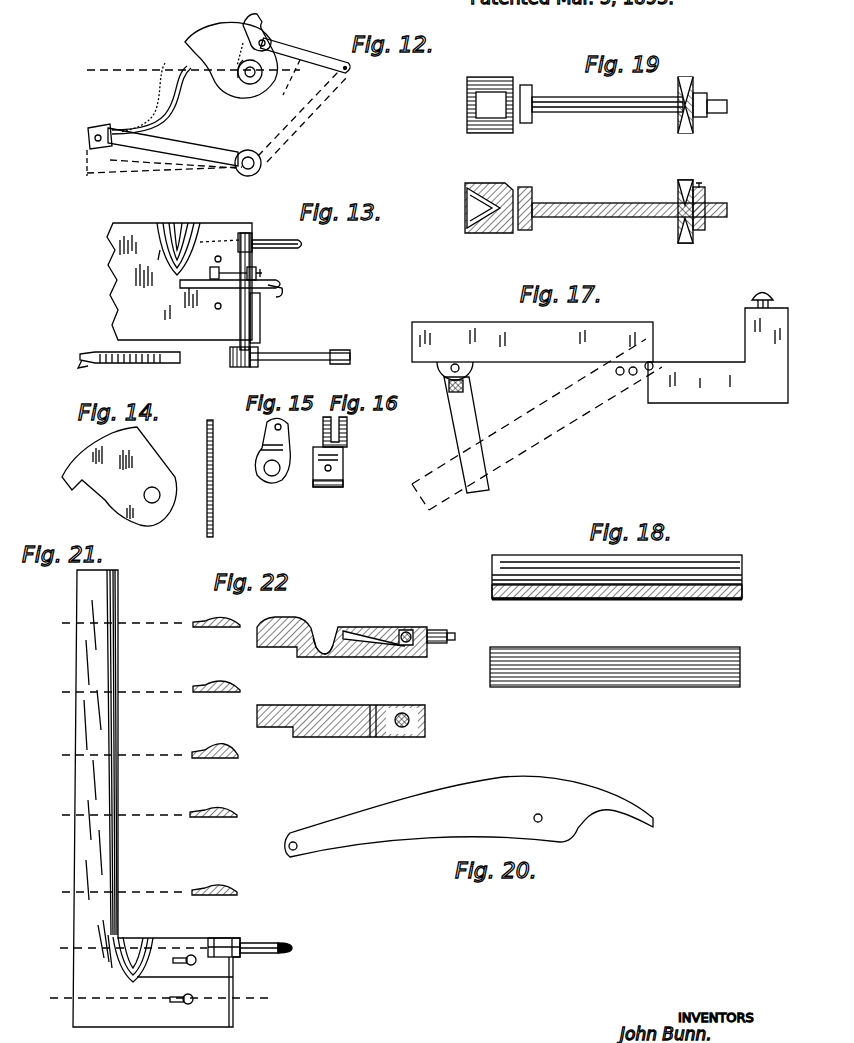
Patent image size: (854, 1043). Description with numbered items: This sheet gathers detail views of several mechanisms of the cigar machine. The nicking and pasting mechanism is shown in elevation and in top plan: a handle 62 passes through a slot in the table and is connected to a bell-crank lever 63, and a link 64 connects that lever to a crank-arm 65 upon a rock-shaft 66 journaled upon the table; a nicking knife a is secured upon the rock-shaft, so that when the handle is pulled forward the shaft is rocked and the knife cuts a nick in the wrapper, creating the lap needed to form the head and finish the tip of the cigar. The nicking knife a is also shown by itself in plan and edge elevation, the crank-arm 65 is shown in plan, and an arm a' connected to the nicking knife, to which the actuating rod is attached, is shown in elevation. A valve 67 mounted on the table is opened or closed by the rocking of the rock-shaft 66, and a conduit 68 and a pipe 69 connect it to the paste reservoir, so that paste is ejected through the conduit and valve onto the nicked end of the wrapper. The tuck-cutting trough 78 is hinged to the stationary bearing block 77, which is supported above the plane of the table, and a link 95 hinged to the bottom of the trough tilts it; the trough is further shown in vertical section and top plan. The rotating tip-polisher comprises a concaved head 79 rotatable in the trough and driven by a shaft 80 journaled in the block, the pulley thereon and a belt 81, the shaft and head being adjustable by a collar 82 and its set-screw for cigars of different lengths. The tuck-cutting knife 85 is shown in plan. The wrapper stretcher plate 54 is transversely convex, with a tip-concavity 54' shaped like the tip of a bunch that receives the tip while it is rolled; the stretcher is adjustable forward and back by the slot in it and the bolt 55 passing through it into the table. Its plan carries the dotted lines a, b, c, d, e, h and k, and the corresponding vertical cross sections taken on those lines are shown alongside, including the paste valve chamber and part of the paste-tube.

In FIG. 12, the nicking knife a is at (231, 60).
In FIG. 13, the nicking knife a is at (231, 291).
In FIG. 14, the nicking knife a is at (137, 478).
In FIG. 21, the nicking knife a is at (141, 622).
In FIG. 16, the forked block a' is at (339, 452).
In FIG. 21, the wrapper stretcher plate 54 is at (100, 752).
In FIG. 22, the wrapper stretcher plate 54 is at (342, 679).
In FIG. 13, the tip-concavity 54' is at (198, 237).
In FIG. 21, the tip-concavity 54' is at (127, 950).
In FIG. 22, the tip-concavity 54' is at (326, 634).
In FIG. 13, the bolt 55 is at (183, 283).
In FIG. 21, the bolt 55 is at (156, 798).
In FIG. 12, the handle 62 is at (163, 114).
In FIG. 13, the handle 62 is at (129, 369).
In FIG. 12, the bell-crank lever 63 is at (245, 154).
In FIG. 13, the bell-crank lever 63 is at (227, 365).
In FIG. 12, the link 64 is at (306, 51).
In FIG. 13, the link 64 is at (300, 348).
In FIG. 12, the crank-arm 65 is at (268, 40).
In FIG. 13, the crank-arm 65 is at (261, 367).
In FIG. 15, the crank-arm 65 is at (267, 450).
In FIG. 13, the rock-shaft 66 is at (250, 258).
In FIG. 22, the rock-shaft 66 is at (416, 634).
In FIG. 22, the valve 67 is at (407, 630).
In FIG. 22, the conduit 68 is at (380, 636).
In FIG. 13, the pipe 69 is at (270, 234).
In FIG. 21, the pipe 69 is at (231, 961).
In FIG. 22, the pipe 69 is at (451, 637).
In FIG. 17, the stationary bearing block 77 is at (716, 348).
In FIG. 17, the trough 78 is at (532, 351).
In FIG. 18, the trough 78 is at (616, 621).
In FIG. 19, the concaved head 79 is at (498, 155).
In FIG. 19, the shaft 80 is at (634, 149).
In FIG. 19, the belt 81 is at (681, 180).
In FIG. 19, the collar 82 is at (710, 161).
In FIG. 20, the tuck-cutting knife 85 is at (469, 816).
In FIG. 17, the link 95 is at (473, 435).
In FIG. 21, the section line b is at (141, 688).
In FIG. 21, the section line c is at (139, 753).
In FIG. 21, the section line d is at (138, 812).
In FIG. 21, the section line e is at (138, 890).
In FIG. 21, the section line h is at (122, 948).
In FIG. 21, the section line k is at (149, 997).